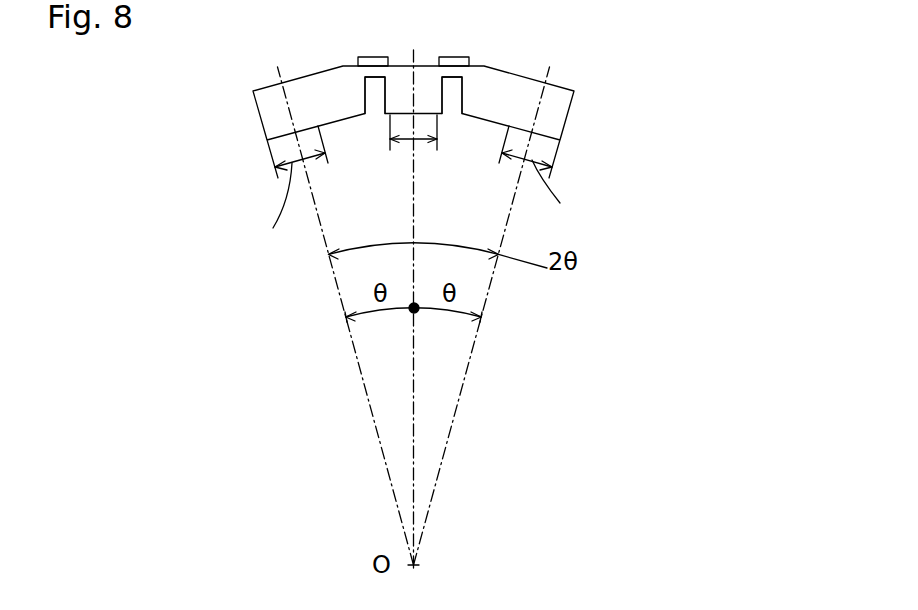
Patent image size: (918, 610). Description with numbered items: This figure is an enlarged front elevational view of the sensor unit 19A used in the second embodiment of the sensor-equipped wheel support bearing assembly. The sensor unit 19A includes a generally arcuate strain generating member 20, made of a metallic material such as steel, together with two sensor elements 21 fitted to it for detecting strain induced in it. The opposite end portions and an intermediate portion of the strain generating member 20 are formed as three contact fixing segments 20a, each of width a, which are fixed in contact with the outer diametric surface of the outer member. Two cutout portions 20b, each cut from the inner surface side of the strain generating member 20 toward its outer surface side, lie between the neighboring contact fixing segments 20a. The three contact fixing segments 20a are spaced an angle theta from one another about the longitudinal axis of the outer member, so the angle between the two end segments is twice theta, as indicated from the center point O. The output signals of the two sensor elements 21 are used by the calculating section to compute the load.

The sensor unit 19A is at (604, 67).
The strain generating member 20 is at (313, 75).
The contact fixing segment 20a is at (283, 135).
The cutout portion 20b is at (367, 85).
The sensor element 21 is at (377, 57).